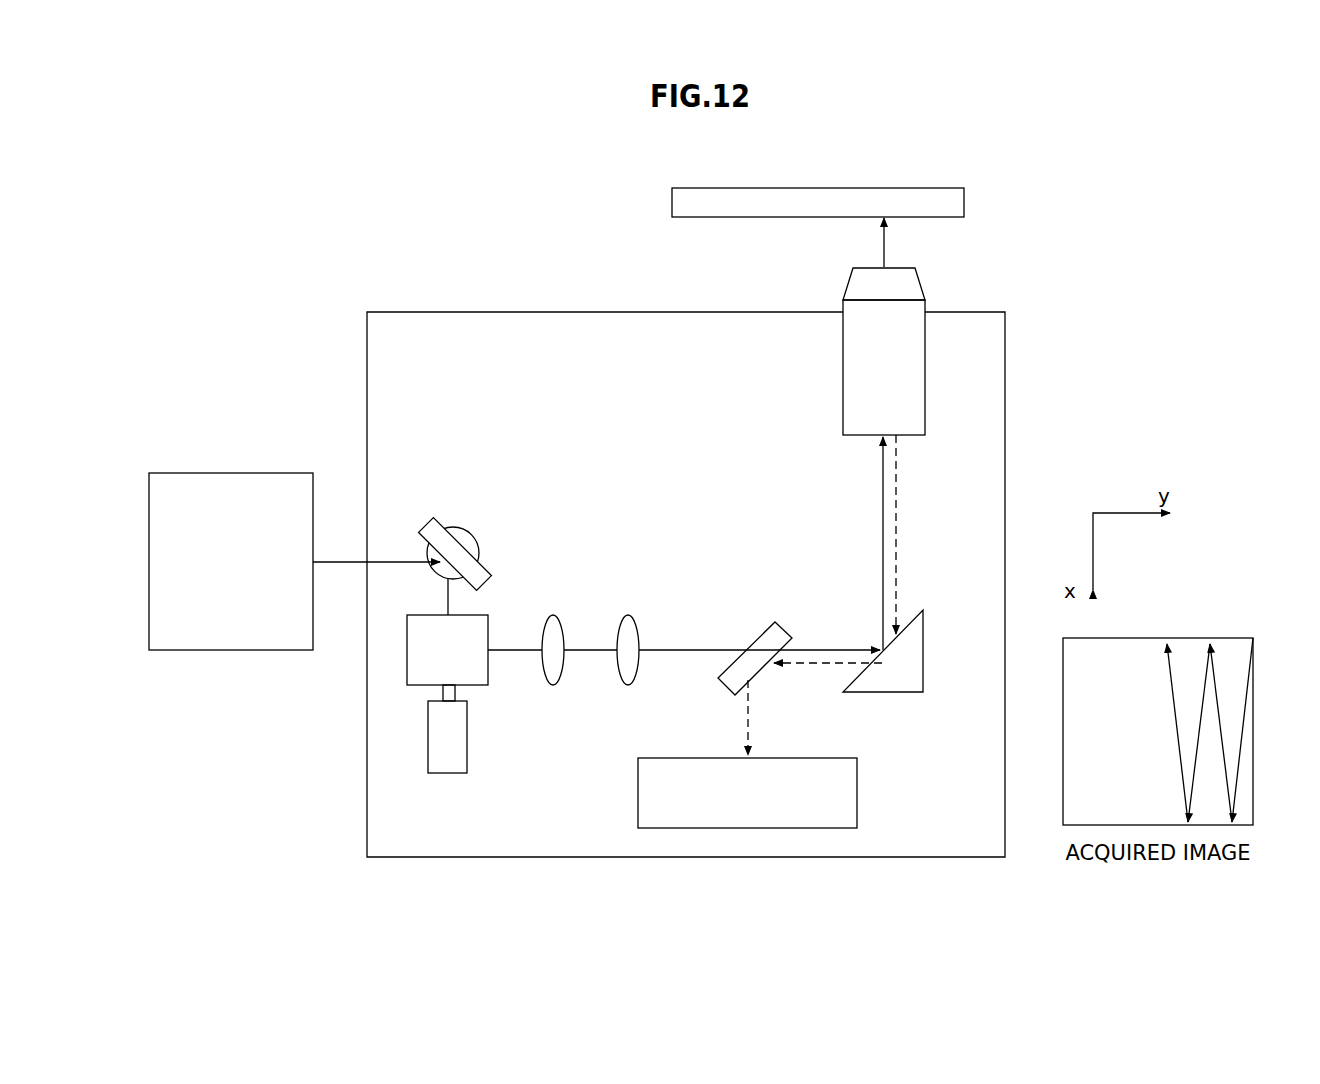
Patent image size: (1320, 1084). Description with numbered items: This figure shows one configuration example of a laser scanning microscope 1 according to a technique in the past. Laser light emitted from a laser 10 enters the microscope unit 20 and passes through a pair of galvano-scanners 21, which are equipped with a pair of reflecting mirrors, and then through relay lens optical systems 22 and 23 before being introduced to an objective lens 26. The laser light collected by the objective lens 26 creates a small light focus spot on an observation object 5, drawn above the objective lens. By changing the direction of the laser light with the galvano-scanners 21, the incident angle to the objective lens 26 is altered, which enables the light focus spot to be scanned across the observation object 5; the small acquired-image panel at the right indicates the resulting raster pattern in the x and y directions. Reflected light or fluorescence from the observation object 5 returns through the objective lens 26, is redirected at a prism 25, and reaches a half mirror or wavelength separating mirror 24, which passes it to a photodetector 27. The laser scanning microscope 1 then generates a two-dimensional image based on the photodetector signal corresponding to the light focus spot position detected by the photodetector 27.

The laser scanning microscope 1 is at (290, 171).
The observation object 5 is at (934, 187).
The laser 10 is at (263, 472).
The microscope unit 20 is at (583, 310).
The galvano-scanners 21 is at (489, 511).
The relay lens optical system 22 is at (552, 615).
The relay lens optical system 23 is at (629, 615).
The half mirror or wavelength separating mirror 24 is at (758, 637).
The prism 25 is at (927, 647).
The objective lens 26 is at (927, 368).
The photodetector 27 is at (780, 757).